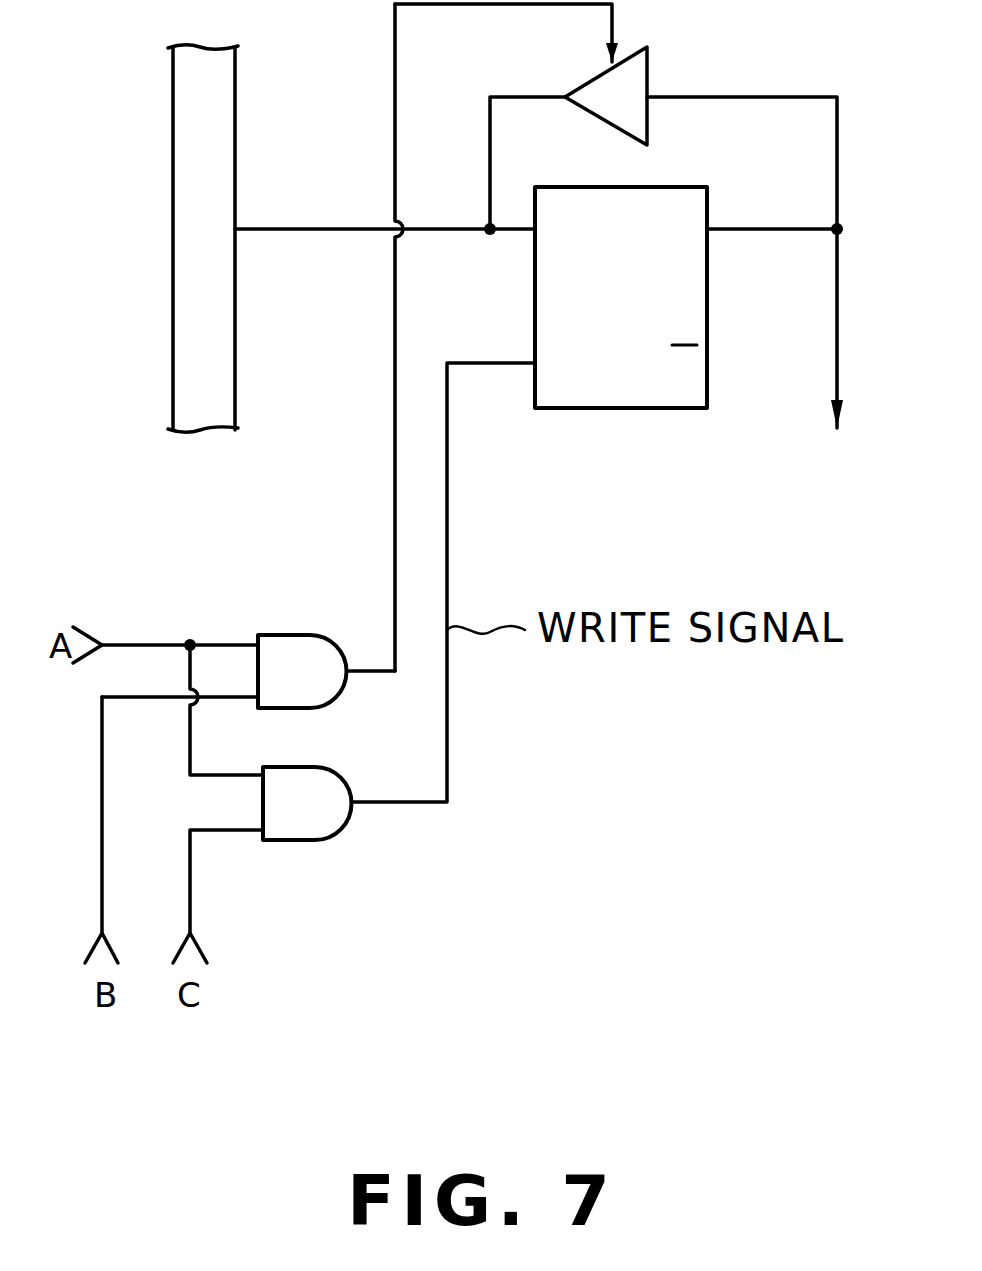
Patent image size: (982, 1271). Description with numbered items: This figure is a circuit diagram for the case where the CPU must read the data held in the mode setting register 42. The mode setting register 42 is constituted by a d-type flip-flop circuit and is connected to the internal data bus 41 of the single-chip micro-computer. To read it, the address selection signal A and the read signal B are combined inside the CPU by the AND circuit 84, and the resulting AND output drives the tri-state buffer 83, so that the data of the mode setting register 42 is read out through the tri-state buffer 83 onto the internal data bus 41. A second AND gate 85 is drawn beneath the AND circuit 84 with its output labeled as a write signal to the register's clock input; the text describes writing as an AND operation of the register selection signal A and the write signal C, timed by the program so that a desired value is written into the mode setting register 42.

The internal data bus 41 is at (222, 173).
The tri-state buffer 83 is at (648, 83).
The mode setting register 42 is at (632, 397).
The AND circuit 84 is at (298, 645).
The AND gate 85 is at (327, 822).